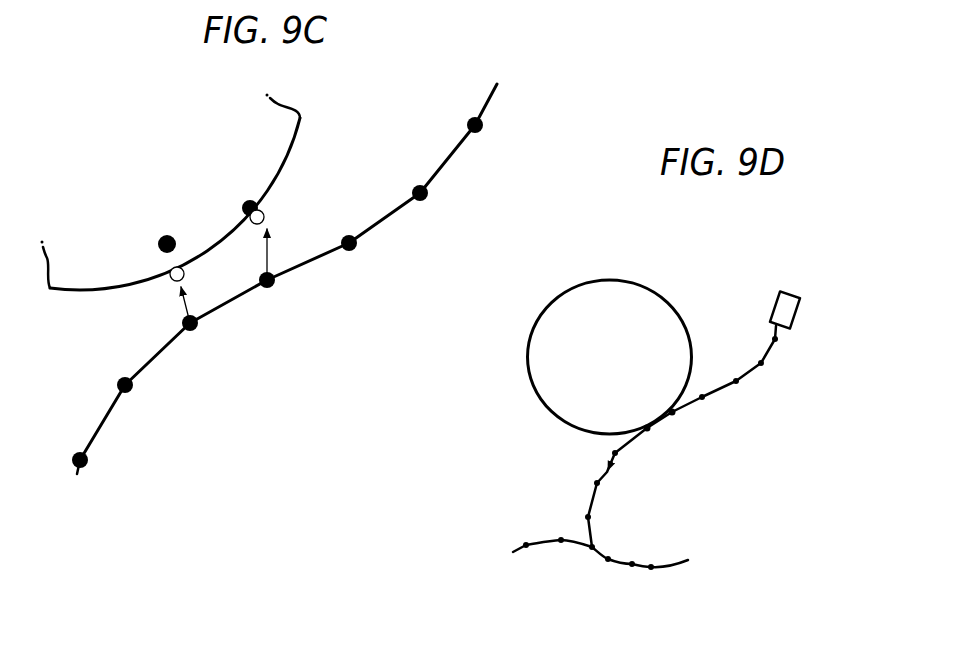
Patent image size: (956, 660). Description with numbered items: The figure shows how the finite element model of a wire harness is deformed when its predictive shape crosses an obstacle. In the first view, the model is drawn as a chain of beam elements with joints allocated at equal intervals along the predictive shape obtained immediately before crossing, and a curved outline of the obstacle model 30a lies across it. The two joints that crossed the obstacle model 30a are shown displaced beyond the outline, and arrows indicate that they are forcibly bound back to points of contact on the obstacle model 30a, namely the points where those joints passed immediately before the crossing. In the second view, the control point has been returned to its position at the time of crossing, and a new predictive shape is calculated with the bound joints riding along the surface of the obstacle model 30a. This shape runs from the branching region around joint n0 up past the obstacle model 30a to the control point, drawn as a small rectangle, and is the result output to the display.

In FIG. 9C, the obstacle model 30a is at (290, 157).
In FIG. 9D, the obstacle model 30a is at (647, 288).
In FIG. 9D, the joint n0 is at (591, 550).